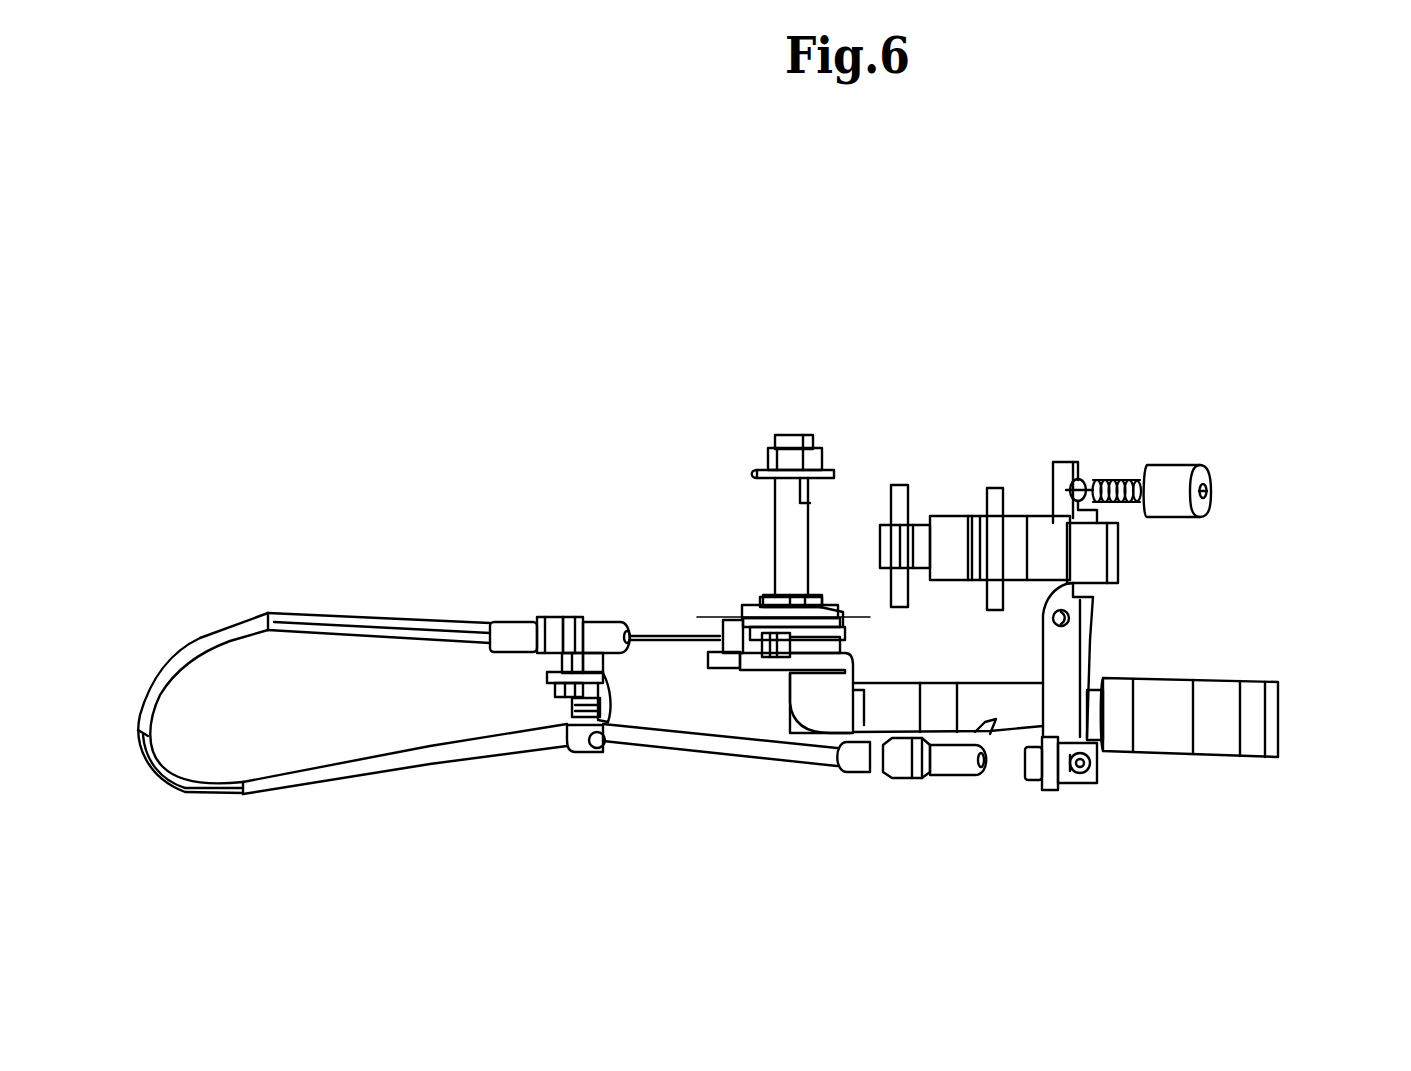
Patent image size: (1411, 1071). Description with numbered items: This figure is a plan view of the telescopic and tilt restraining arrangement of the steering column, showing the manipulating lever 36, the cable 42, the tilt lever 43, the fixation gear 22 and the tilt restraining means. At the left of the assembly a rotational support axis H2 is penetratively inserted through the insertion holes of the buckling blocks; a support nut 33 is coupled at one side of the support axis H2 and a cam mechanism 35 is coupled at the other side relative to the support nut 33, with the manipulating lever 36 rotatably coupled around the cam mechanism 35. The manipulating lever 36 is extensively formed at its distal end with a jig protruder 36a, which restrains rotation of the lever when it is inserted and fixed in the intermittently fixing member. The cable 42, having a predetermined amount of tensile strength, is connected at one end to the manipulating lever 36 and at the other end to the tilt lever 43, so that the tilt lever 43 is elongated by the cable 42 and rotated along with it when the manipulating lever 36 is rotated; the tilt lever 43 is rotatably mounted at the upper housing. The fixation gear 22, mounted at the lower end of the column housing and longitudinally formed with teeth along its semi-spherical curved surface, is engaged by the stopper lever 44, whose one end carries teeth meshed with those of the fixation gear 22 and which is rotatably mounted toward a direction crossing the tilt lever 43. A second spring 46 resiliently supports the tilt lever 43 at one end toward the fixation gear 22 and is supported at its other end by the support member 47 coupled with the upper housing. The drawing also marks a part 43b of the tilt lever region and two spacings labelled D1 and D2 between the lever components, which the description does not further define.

The fixation gear 22 is at (945, 530).
The support nut 33 is at (810, 463).
The cam mechanism 35 is at (830, 610).
The manipulating lever 36 is at (905, 715).
The jig protruder 36a is at (730, 627).
The cable 42 is at (173, 653).
The tilt lever 43 is at (1070, 647).
The pin 43b is at (1093, 477).
The stopper lever 44 is at (1087, 547).
The second spring 46 is at (1118, 482).
The support member 47 is at (1166, 477).
The rotational support axis H2 is at (783, 537).
The dimension D1 is at (697, 616).
The dimension D2 is at (870, 616).